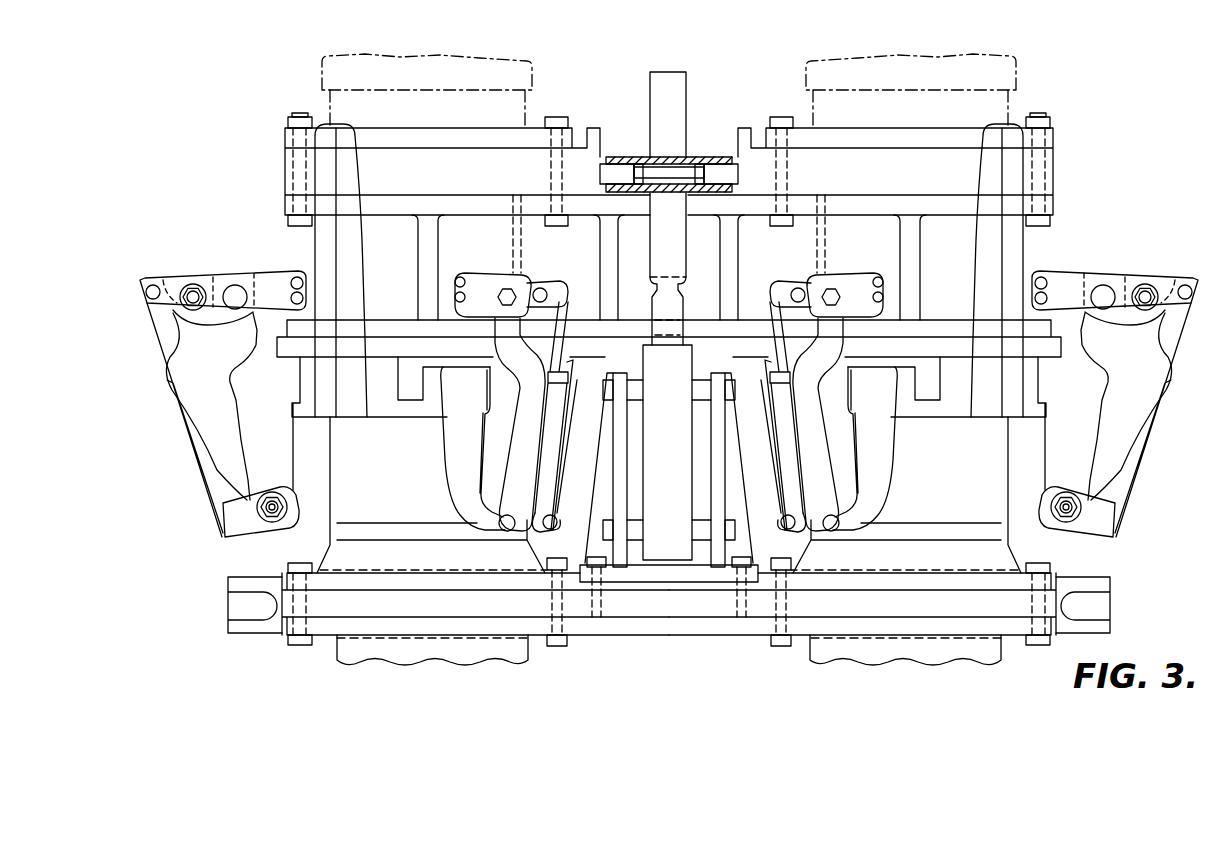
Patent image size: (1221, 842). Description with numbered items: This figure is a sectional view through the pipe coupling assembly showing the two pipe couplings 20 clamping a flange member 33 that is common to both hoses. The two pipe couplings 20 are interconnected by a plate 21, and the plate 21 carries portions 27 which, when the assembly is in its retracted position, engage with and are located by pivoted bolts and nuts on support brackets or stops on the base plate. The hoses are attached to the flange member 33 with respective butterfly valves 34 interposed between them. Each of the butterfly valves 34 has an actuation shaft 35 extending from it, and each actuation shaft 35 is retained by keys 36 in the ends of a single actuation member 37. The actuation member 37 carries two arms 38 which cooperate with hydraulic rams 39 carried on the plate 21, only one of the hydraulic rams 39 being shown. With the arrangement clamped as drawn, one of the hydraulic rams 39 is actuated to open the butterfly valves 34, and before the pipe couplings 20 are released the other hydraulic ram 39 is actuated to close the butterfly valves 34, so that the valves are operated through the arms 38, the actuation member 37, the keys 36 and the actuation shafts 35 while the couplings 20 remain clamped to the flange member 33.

The pipe coupling 20 is at (199, 452).
The plate 21 is at (1053, 567).
The portions 27 is at (252, 582).
The flange member 33 is at (728, 324).
The butterfly valve 34 is at (300, 160).
The actuation shaft 35 is at (612, 166).
The key 36 is at (632, 158).
The actuation member 37 is at (683, 167).
The arm 38 is at (675, 93).
The hydraulic ram 39 is at (684, 392).